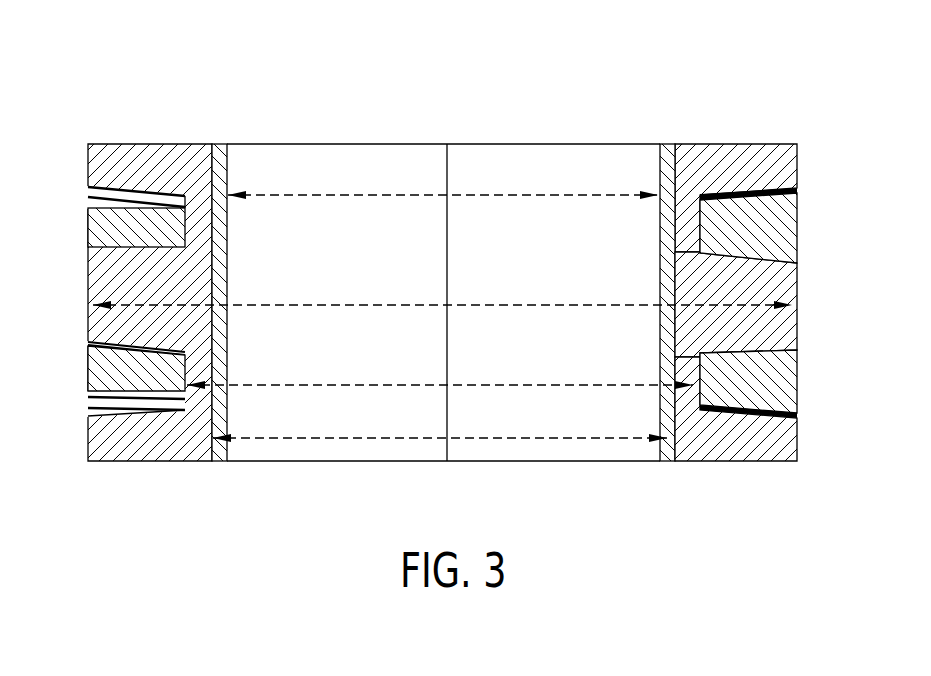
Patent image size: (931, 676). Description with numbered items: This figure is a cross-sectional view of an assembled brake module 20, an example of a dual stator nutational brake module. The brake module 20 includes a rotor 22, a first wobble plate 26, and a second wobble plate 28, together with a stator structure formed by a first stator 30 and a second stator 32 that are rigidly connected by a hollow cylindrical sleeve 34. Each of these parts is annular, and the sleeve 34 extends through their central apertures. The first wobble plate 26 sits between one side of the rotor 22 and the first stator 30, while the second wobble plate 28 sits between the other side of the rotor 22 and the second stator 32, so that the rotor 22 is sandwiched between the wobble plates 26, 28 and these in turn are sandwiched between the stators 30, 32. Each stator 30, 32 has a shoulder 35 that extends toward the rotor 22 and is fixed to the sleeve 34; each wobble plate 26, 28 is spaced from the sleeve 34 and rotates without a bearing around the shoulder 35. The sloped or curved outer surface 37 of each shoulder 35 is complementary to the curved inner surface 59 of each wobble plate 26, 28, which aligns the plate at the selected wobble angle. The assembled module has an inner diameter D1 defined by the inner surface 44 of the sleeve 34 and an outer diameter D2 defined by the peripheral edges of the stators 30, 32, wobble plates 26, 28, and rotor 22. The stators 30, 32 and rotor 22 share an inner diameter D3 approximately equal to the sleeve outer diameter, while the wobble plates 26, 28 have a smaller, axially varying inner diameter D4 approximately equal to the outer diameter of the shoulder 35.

The brake module 20 is at (148, 82).
The rotor 22 is at (780, 345).
The first wobble plate 26 is at (778, 233).
The second wobble plate 28 is at (780, 386).
The first stator 30 is at (780, 172).
The second stator 32 is at (780, 450).
The hollow cylindrical sleeve 34 is at (222, 144).
The shoulder 35 is at (203, 227).
The outer surface 37 is at (190, 225).
The inner surface 44 is at (345, 170).
The inner surface 59 is at (208, 364).
The inner diameter D1 is at (524, 194).
The outer diameter D2 is at (546, 304).
The inner diameter D3 is at (519, 446).
The inner diameter D4 is at (545, 384).